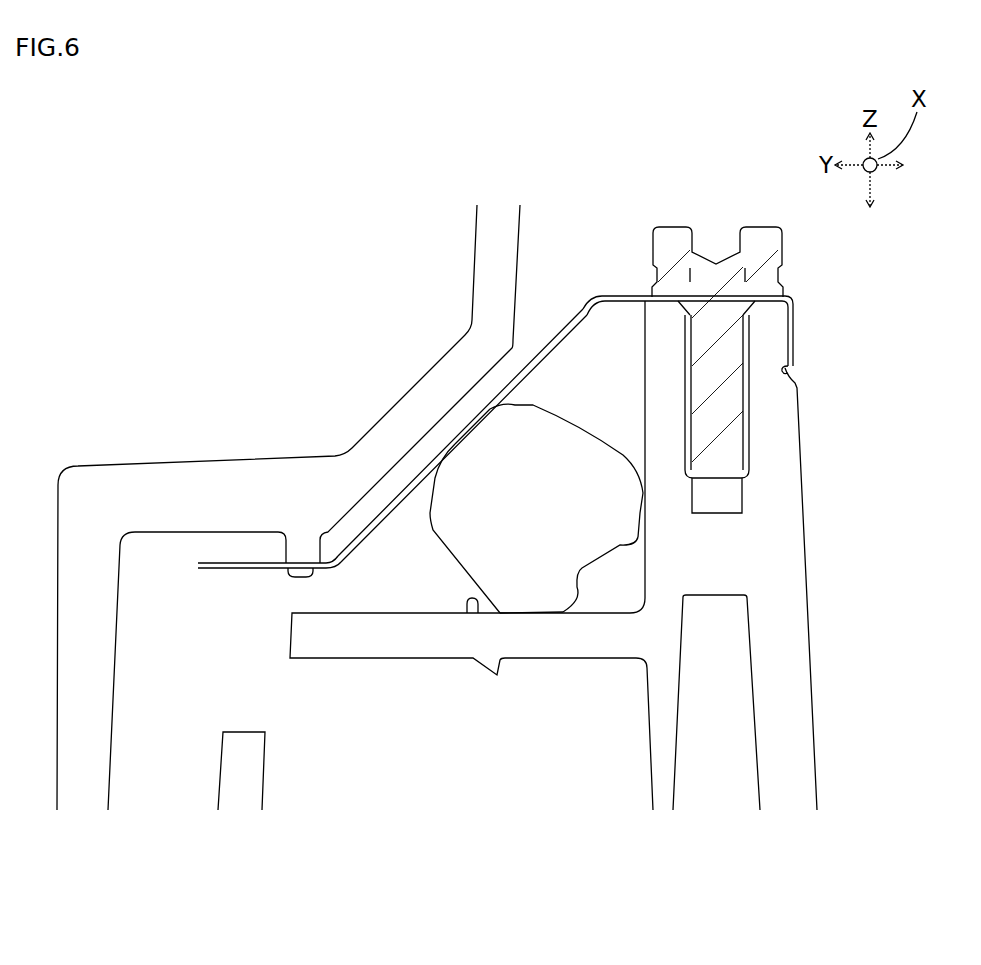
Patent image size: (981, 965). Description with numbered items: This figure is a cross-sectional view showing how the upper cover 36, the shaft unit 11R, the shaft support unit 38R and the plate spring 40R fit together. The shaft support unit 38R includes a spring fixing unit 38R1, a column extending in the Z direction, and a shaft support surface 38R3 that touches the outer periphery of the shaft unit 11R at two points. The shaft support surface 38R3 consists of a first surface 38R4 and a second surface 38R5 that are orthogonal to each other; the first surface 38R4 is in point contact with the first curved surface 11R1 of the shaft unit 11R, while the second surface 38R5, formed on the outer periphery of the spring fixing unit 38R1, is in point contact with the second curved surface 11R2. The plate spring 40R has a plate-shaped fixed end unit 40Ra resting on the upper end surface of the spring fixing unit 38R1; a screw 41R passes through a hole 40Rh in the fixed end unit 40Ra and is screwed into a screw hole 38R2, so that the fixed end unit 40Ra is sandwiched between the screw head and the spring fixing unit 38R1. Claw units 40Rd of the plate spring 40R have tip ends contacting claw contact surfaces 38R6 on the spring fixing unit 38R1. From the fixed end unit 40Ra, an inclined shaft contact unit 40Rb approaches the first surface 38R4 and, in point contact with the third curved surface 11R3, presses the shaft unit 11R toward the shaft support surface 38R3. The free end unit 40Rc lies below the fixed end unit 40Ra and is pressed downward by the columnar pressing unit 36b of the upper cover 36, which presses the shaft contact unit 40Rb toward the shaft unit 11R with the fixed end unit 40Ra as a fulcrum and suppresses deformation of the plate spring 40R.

The upper cover 36 is at (288, 507).
The pressing unit 36b is at (302, 555).
The plate spring 40R is at (549, 359).
The fixed end unit 40Ra is at (770, 293).
The shaft contact unit 40Rb is at (402, 500).
The free end unit 40Rc is at (217, 563).
The claw unit 40Rd is at (797, 316).
The hole 40Rh is at (740, 293).
The screw 41R is at (677, 215).
The shaft support unit 38R is at (612, 563).
The spring fixing unit 38R1 is at (780, 425).
The screw hole 38R2 is at (727, 500).
The shaft support surface 38R3 is at (471, 707).
The first surface 38R4 is at (467, 613).
The second surface 38R5 is at (637, 597).
The claw contact surface 38R6 is at (792, 348).
The shaft unit 11R is at (642, 509).
The first curved surface 11R1 is at (537, 618).
The second curved surface 11R2 is at (643, 521).
The third curved surface 11R3 is at (460, 437).